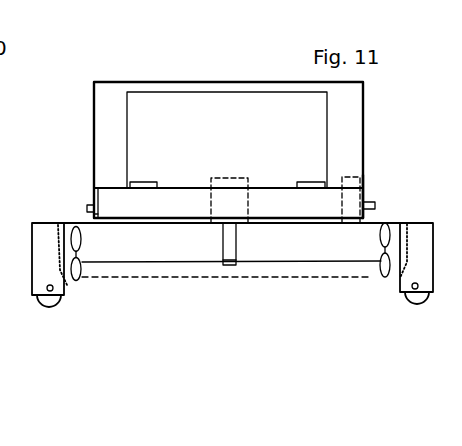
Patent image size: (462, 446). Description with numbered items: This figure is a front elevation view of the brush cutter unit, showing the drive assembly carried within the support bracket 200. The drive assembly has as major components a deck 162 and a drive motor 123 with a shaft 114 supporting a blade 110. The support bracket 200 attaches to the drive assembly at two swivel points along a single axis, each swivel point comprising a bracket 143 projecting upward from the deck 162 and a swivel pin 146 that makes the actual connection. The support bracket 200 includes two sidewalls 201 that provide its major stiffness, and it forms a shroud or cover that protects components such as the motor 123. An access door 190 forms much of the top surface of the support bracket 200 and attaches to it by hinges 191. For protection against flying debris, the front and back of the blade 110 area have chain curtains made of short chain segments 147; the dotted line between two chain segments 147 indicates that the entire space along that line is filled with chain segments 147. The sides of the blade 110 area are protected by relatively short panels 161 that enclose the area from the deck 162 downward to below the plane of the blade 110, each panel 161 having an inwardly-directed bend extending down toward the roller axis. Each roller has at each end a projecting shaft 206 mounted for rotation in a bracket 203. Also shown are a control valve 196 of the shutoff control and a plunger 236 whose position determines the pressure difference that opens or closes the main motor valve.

The support bracket 200 is at (91, 75).
The access door 190 is at (127, 103).
The hinges 191 is at (132, 185).
The bracket 143 is at (91, 198).
The swivel pin 146 is at (87, 208).
The bracket 203 is at (42, 238).
The projecting shaft 206 is at (64, 307).
The deck 162 is at (50, 303).
The chain segments 147 is at (77, 281).
The blade 110 is at (155, 263).
The shaft 114 is at (228, 248).
The drive motor 123 is at (242, 203).
The sidewalls 201 is at (365, 118).
The control valve 196 is at (353, 172).
The plunger 236 is at (366, 179).
The panels 161 is at (407, 222).